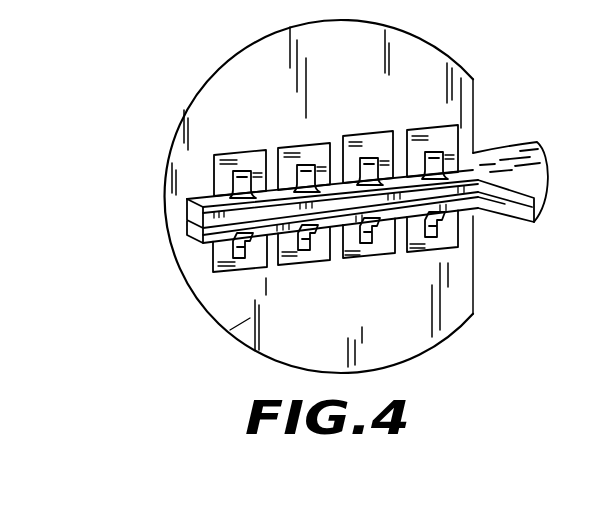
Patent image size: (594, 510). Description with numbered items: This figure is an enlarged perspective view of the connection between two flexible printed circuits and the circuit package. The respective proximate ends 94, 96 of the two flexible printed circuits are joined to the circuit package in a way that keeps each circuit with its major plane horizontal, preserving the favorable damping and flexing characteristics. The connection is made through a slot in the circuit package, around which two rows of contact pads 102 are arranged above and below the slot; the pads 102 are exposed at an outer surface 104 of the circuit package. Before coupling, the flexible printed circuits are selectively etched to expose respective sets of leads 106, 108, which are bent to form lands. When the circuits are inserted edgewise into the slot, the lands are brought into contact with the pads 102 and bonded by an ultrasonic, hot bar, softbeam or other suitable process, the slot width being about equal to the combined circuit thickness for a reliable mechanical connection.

The proximate end 94 is at (502, 163).
The proximate end 96 is at (503, 213).
The contact pads 102 is at (235, 153).
The outer surface 104 is at (243, 322).
The leads 106 is at (368, 158).
The leads 108 is at (372, 243).